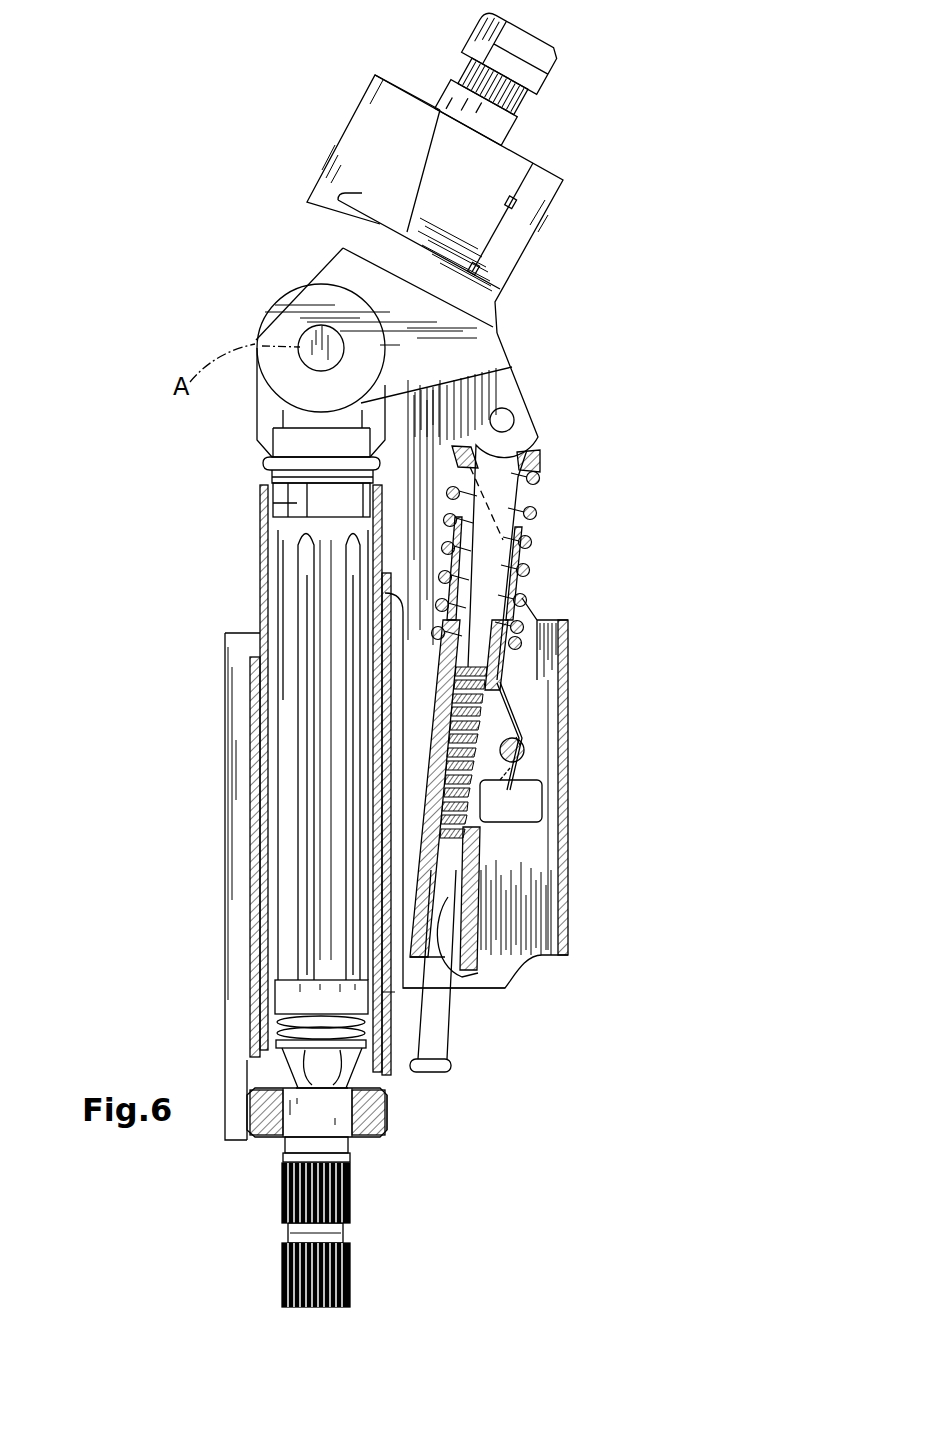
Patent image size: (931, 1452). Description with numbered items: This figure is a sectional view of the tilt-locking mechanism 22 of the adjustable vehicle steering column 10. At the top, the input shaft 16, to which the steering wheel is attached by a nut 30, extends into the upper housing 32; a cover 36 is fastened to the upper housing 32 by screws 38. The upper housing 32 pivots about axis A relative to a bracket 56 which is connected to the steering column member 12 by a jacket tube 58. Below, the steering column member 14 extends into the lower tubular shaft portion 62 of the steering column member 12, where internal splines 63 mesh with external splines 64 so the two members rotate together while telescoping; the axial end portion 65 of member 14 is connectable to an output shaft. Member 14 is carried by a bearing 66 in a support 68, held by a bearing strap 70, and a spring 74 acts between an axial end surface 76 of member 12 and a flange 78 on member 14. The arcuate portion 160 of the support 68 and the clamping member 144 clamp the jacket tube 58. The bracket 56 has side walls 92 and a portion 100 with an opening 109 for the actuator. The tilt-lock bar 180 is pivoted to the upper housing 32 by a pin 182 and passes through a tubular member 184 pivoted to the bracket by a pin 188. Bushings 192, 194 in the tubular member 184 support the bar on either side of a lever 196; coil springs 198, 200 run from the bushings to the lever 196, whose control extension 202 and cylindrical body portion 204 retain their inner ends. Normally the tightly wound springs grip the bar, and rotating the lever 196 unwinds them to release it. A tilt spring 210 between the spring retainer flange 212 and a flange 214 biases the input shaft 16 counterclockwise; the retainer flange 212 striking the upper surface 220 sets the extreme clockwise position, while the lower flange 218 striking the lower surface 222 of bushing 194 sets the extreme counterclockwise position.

The vehicle steering column 10 is at (140, 348).
The steering column member 12 is at (272, 508).
The steering column member 14 is at (285, 1068).
The input shaft 16 is at (488, 107).
The tilt locking mechanism 22 is at (566, 560).
The nut 30 is at (516, 24).
The upper housing 32 is at (484, 178).
The cover 36 is at (360, 191).
The screws 38 is at (475, 273).
The bracket 56 is at (537, 945).
The jacket tube 58 is at (262, 593).
The lower tubular shaft portion 62 is at (288, 958).
The internal splines 63 is at (302, 890).
The external splines 64 is at (392, 1018).
The axial end portion 65 is at (322, 1232).
The bearing 66 is at (357, 1134).
The support 68 is at (230, 742).
The bearing strap 70 is at (386, 1112).
The spring 74 is at (283, 1017).
The axial end surface 76 is at (283, 1023).
The flange 78 is at (374, 1078).
The side walls 92 is at (513, 887).
The portion of bracket 100 is at (562, 700).
The opening 109 is at (562, 760).
The clamping member 144 is at (386, 992).
The arcuate portion 160 is at (253, 795).
The tilt-lock bar 180 is at (490, 592).
The pin 182 is at (503, 420).
The tubular member 184 is at (540, 550).
The pin 188 is at (560, 700).
The bushing 192 is at (502, 650).
The bushing 194 is at (488, 865).
The lever 196 is at (516, 737).
The coil spring 198 is at (525, 778).
The coil spring 200 is at (478, 937).
The control extension 202 is at (523, 810).
The cylindrical body portion 204 is at (437, 760).
The tilt spring 210 is at (535, 505).
The spring retainer flange 212 is at (542, 458).
The flange 214 is at (437, 652).
The lower flange 218 is at (438, 1070).
The upper surface 220 is at (321, 502).
The lower surface 222 is at (442, 962).